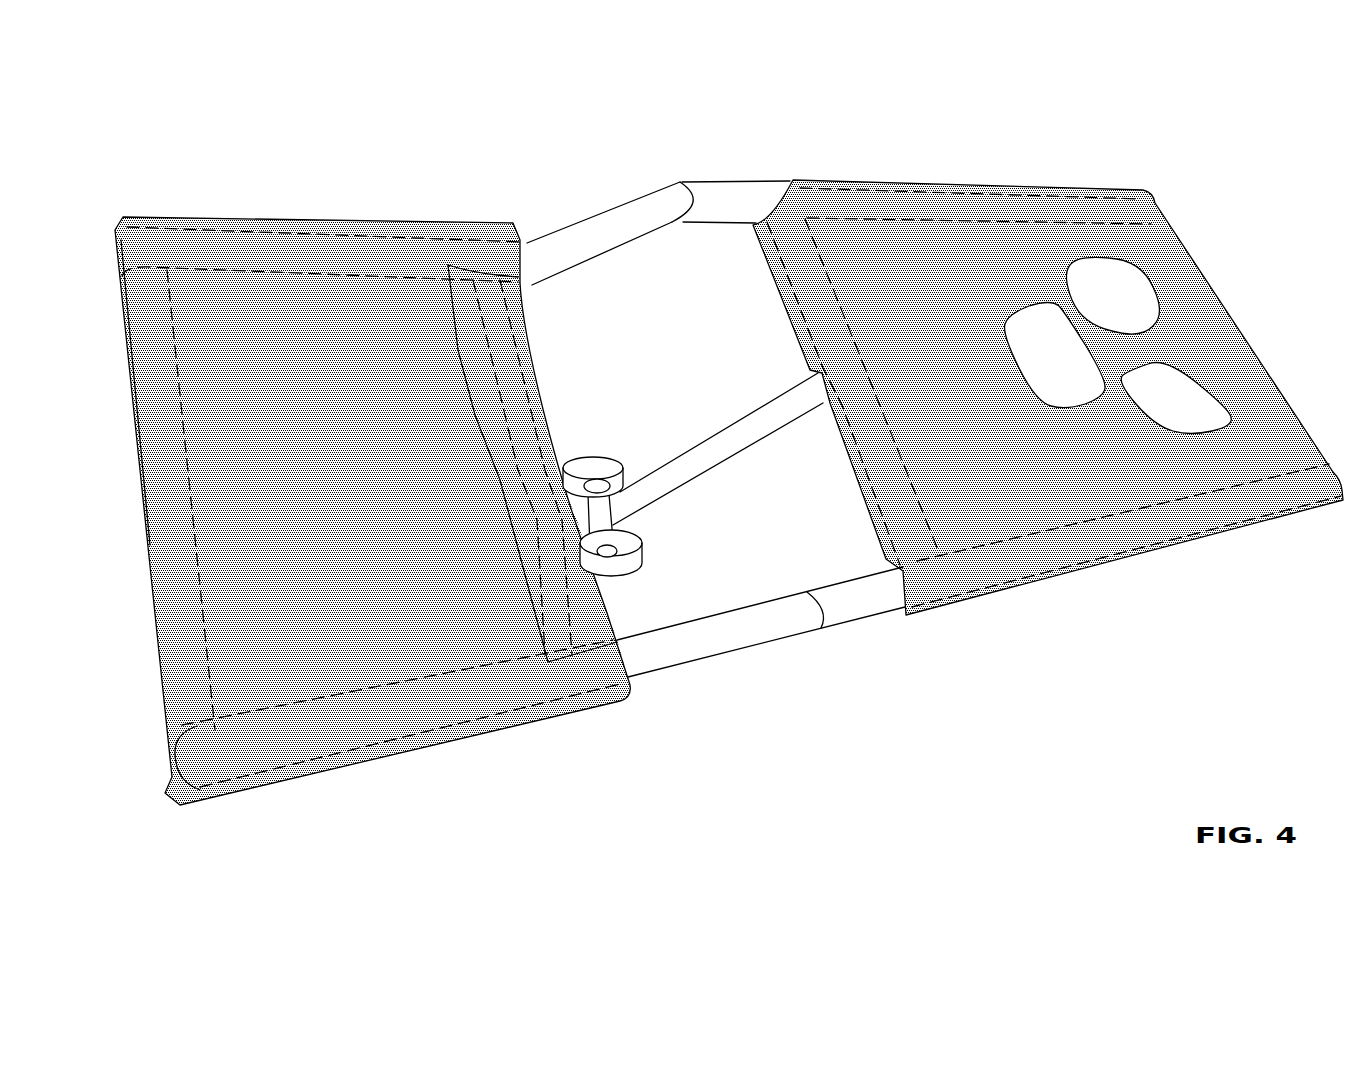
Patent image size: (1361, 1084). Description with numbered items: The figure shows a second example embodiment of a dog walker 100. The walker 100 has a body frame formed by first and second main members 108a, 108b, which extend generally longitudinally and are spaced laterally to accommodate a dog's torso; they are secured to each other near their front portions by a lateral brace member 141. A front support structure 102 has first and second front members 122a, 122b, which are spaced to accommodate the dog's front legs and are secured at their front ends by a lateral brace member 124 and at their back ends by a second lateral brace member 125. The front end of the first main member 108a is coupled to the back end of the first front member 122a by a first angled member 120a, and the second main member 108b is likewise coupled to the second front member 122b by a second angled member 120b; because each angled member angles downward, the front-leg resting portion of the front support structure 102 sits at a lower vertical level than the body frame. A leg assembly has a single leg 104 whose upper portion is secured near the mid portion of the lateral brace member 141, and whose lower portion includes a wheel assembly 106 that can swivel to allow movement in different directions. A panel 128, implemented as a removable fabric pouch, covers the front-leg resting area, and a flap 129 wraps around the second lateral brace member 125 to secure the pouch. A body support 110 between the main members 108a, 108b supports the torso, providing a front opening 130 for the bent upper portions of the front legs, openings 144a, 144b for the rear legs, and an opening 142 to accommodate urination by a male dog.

The walker 100 is at (517, 94).
The front support structure 102 is at (858, 892).
The leg 104 is at (733, 440).
The wheel assembly 106 is at (583, 449).
The first main member 108a is at (877, 602).
The second main member 108b is at (733, 193).
The body support 110 is at (1029, 472).
The first angled member 120a is at (717, 647).
The second angled member 120b is at (602, 225).
The first front member 122a is at (455, 712).
The second front member 122b is at (350, 247).
The lateral brace member 124 is at (160, 500).
The second lateral brace member 125 is at (512, 347).
The panel 128 is at (308, 607).
The flap 129 is at (500, 460).
The opening 130 is at (665, 306).
The lateral brace member 141 is at (886, 425).
The opening 142 is at (1045, 348).
The opening 144a is at (1170, 394).
The opening 144b is at (1119, 284).